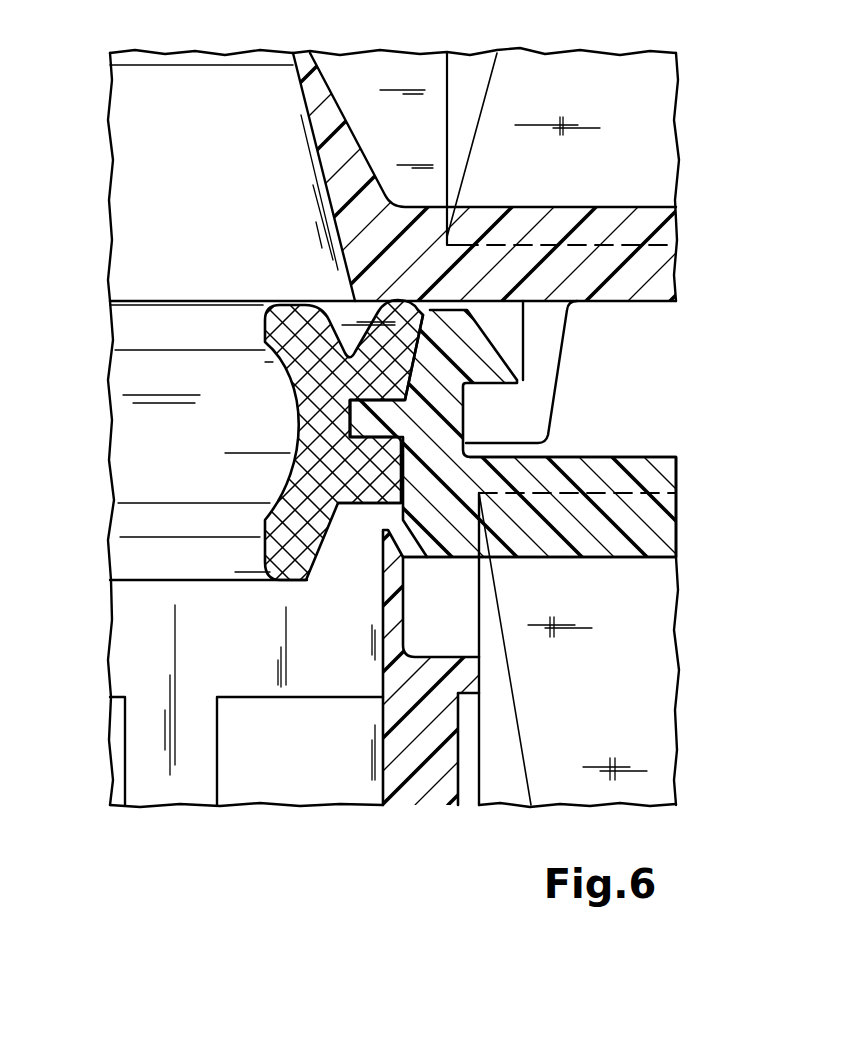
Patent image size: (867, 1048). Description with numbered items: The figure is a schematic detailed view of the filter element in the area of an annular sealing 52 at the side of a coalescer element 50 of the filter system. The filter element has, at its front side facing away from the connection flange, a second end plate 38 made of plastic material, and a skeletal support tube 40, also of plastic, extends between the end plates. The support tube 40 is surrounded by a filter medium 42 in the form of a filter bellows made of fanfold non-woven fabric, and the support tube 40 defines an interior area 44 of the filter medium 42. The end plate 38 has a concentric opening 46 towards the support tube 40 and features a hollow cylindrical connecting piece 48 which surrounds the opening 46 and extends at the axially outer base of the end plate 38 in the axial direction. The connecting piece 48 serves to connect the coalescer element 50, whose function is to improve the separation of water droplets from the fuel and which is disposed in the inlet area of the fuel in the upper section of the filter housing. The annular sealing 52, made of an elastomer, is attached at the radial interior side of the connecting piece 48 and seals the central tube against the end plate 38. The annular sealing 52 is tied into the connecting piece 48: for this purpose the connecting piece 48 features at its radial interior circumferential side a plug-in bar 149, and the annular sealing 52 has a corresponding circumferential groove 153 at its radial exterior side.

The coalescer element 50 is at (656, 163).
The annular sealing 52 is at (288, 325).
The hollow cylindrical connecting piece 48 is at (455, 384).
The plug-in bar 149 is at (365, 417).
The concentric opening 46 is at (163, 423).
The circumferential groove 153 is at (365, 504).
The second end plate 38 is at (657, 477).
The filter medium 42 is at (655, 760).
The skeletal support tube 40 is at (423, 777).
The interior area 44 is at (166, 780).